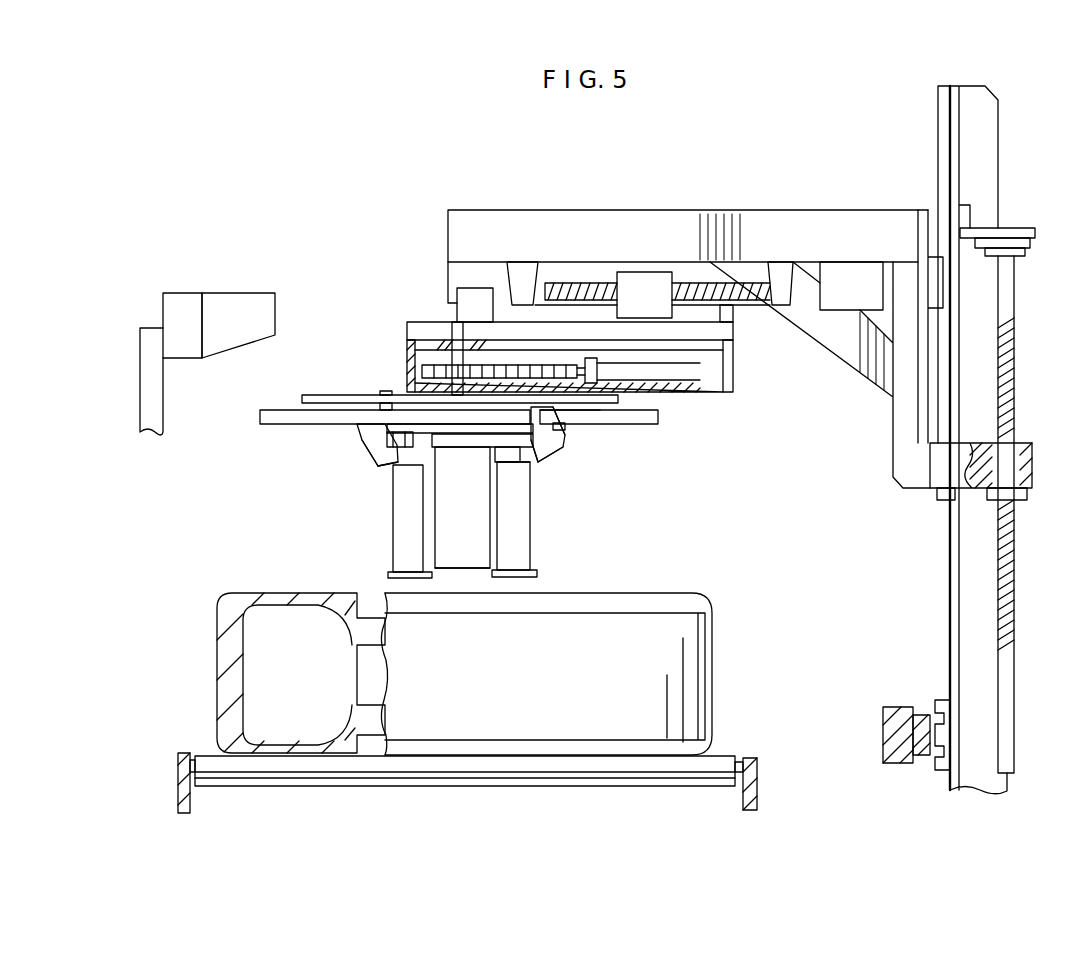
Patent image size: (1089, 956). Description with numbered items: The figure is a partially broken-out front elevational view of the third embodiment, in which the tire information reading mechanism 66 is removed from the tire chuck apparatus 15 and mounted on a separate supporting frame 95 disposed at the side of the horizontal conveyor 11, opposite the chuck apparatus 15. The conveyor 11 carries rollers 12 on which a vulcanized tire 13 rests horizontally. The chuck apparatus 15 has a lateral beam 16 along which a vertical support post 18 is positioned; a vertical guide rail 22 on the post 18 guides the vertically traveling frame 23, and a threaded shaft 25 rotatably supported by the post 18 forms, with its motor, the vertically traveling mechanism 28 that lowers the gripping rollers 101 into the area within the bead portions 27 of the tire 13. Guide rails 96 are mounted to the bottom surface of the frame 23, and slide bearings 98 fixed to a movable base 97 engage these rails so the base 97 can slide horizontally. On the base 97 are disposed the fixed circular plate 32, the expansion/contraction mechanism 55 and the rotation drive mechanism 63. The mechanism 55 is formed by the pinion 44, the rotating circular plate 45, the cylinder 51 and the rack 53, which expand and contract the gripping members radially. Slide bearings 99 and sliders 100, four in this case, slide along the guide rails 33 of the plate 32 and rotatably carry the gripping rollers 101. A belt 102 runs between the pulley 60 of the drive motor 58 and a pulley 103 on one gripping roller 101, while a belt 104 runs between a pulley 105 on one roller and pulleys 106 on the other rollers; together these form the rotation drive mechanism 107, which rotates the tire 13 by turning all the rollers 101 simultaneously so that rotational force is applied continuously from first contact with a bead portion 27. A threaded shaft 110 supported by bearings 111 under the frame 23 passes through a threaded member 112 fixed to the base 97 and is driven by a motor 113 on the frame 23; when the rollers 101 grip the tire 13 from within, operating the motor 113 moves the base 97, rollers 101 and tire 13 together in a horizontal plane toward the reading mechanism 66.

The horizontal conveyor 11 is at (739, 750).
The rollers 12 is at (560, 770).
The vulcanized tire 13 is at (684, 586).
The tire chuck apparatus 15 is at (764, 190).
The lateral beam 16 is at (890, 706).
The support post 18 is at (970, 568).
The guide rail 22 is at (938, 137).
The vertically traveling frame 23 is at (826, 262).
The threaded shaft 25 is at (1015, 372).
The bead portions 27 is at (340, 627).
The vertically traveling mechanism 28 is at (1013, 223).
The fixed circular plate 32 is at (262, 412).
The guide rails 33 is at (660, 417).
The pinion 44 is at (428, 357).
The rotating circular plate 45 is at (310, 395).
The cylinder 51 is at (690, 378).
The rack 53 is at (600, 415).
The expansion/contraction mechanism 55 is at (740, 386).
The drive motor 58 is at (430, 550).
The pulley 60 is at (452, 447).
The rotation drive mechanism 63 is at (478, 575).
The tire information reading mechanism 66 is at (240, 306).
The supporting frame 95 is at (150, 418).
The guide rails 96 is at (463, 262).
The movable base 97 is at (715, 333).
The slide bearings 98 is at (465, 305).
The slide bearings 99 is at (357, 428).
The sliders 100 is at (393, 460).
The gripping rollers 101 is at (400, 533).
The belt 102 is at (483, 447).
The pulley 103 is at (532, 462).
The belt 104 is at (440, 427).
The pulley 105 is at (545, 447).
The pulleys 106 is at (385, 455).
The rotation drive mechanism 107 is at (632, 457).
The threaded shaft 110 is at (558, 290).
The bearings 111 is at (527, 272).
The threaded member 112 is at (642, 290).
The motor 113 is at (843, 282).